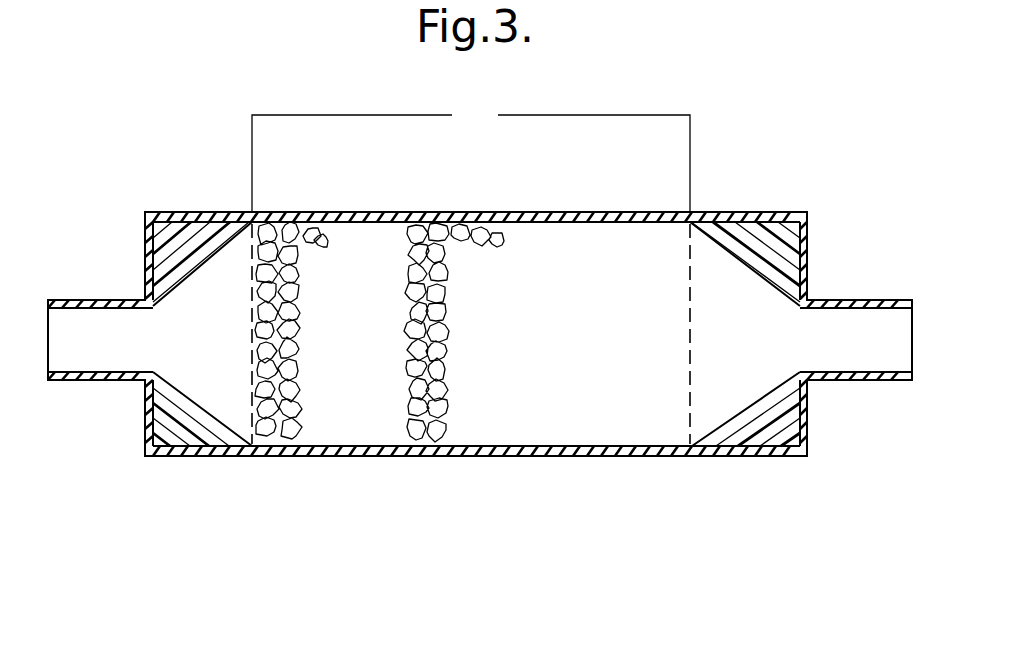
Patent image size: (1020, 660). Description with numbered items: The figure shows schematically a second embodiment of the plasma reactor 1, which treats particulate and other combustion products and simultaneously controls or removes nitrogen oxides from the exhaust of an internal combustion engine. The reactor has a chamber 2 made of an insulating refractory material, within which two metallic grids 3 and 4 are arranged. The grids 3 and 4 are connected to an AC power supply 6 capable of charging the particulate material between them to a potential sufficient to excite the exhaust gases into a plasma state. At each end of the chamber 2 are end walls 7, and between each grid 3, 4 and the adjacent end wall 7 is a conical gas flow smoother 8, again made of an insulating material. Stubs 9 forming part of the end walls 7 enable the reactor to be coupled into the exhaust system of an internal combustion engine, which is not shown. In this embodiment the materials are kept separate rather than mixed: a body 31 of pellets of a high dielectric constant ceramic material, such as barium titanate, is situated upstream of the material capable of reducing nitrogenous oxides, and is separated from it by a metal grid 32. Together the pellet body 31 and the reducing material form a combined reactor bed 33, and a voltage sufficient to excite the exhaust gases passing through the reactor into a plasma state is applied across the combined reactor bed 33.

The plasma reactor 1 is at (337, 459).
The chamber 2 is at (598, 450).
The metallic grid 3 is at (253, 347).
The metallic grid 4 is at (693, 347).
The AC power supply 6 is at (486, 100).
The end wall 7 is at (144, 423).
The conical gas flow smoother 8 is at (206, 234).
The stub 9 is at (110, 300).
The body of pellets 31 is at (287, 240).
The metal grid 32 is at (403, 308).
The combined reactor bed 33 is at (551, 341).